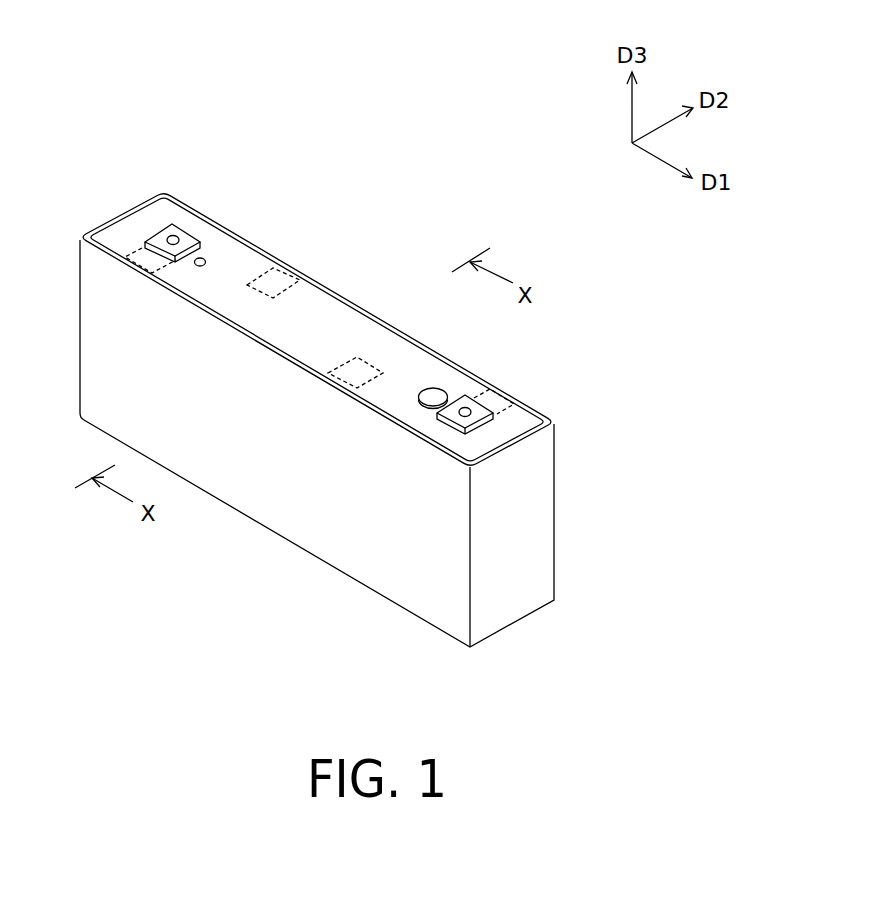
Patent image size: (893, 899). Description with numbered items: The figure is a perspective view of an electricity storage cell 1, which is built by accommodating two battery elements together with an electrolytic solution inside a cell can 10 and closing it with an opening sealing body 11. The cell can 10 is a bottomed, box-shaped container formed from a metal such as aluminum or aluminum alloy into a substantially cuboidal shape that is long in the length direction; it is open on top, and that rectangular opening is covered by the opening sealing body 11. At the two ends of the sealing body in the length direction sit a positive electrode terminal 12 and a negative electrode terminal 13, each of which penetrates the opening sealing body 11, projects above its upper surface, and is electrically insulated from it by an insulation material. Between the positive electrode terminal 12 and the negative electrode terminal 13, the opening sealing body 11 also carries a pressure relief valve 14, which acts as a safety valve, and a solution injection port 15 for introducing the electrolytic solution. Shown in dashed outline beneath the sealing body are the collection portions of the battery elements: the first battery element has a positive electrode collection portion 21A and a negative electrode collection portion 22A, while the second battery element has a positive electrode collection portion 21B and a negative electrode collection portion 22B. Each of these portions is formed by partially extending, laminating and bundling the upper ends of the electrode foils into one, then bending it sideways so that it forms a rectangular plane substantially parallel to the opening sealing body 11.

The electricity storage cell 1 is at (393, 94).
The cell can 10 is at (258, 498).
The opening sealing body 11 is at (305, 298).
The positive electrode terminal 12 is at (472, 405).
The negative electrode terminal 13 is at (178, 232).
The pressure relief valve 14 is at (435, 388).
The solution injection port 15 is at (203, 258).
The positive electrode collection portion 21A is at (506, 393).
The positive electrode collection portion 21B is at (370, 364).
The negative electrode collection portion 22A is at (264, 272).
The negative electrode collection portion 22B is at (137, 246).